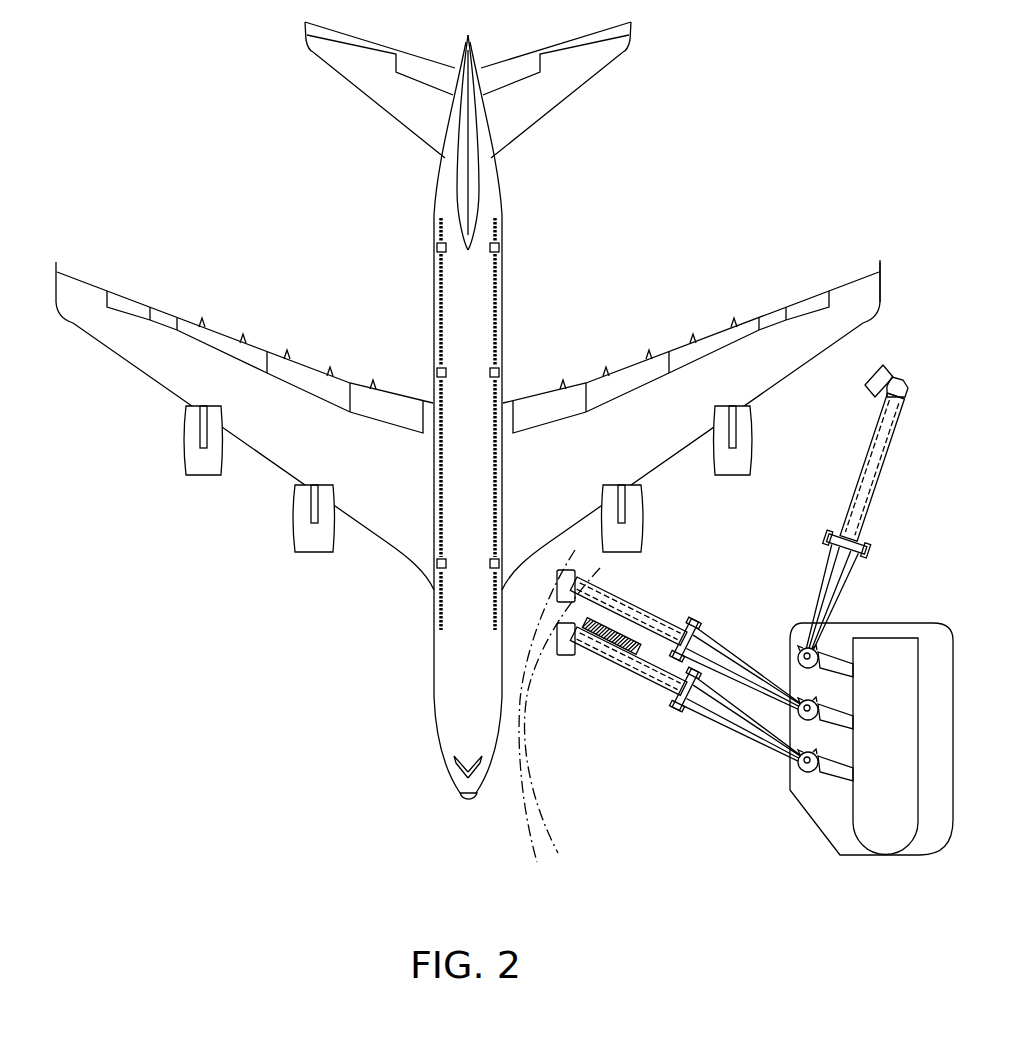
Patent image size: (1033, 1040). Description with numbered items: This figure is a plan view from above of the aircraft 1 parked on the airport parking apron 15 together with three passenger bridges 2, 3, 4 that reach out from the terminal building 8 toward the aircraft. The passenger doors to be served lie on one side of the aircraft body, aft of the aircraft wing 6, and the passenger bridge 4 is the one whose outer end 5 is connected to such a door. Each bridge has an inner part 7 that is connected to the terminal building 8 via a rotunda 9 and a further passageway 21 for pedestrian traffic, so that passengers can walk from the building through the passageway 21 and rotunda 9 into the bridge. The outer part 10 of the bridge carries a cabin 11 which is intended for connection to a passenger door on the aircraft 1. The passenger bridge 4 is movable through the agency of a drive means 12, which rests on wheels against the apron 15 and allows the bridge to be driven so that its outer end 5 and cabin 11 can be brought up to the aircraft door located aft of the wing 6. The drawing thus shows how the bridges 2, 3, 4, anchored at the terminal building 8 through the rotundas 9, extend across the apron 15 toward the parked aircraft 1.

The aircraft 1 is at (490, 340).
The passenger bridge 2 is at (709, 707).
The passenger bridge 3 is at (717, 657).
The passenger bridge 4 is at (866, 489).
The outer end 5 is at (890, 366).
The aircraft wing 6 is at (873, 292).
The inner part 7 is at (848, 598).
The terminal building 8 is at (893, 648).
The rotunda 9 is at (800, 650).
The outer part 10 is at (897, 436).
The cabin 11 is at (868, 388).
The drive means 12 is at (872, 546).
The airport parking apron 15 is at (608, 746).
The passageway 21 is at (843, 673).